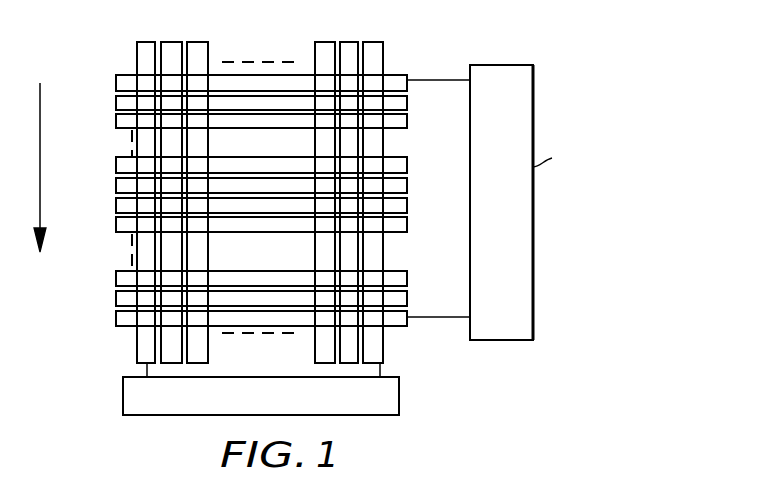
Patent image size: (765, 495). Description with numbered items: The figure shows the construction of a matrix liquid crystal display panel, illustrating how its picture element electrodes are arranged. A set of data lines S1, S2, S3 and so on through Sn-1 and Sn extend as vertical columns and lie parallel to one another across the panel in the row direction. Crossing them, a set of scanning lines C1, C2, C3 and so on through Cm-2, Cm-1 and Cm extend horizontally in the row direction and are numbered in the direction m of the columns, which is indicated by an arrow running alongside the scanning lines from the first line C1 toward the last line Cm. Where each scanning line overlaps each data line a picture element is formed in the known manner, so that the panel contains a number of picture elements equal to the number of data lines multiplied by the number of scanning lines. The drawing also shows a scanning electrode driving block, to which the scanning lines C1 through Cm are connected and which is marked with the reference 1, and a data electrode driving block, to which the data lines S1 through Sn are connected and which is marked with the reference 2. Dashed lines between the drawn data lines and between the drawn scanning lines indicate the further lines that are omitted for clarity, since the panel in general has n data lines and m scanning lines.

The scanning electrode driving circuit 1 is at (438, 317).
The data electrode driving circuit 2 is at (158, 369).
The data line S1 is at (144, 188).
The data line S2 is at (171, 188).
The data line S3 is at (197, 188).
The data line Sn-1 is at (319, 187).
The data line Sn is at (362, 187).
The scanning line C1 is at (242, 83).
The scanning line C2 is at (242, 102).
The scanning line C3 is at (242, 123).
The scanning line Cm-2 is at (230, 281).
The scanning line Cm-1 is at (230, 301).
The scanning line Cm is at (233, 322).
The column direction m is at (40, 170).